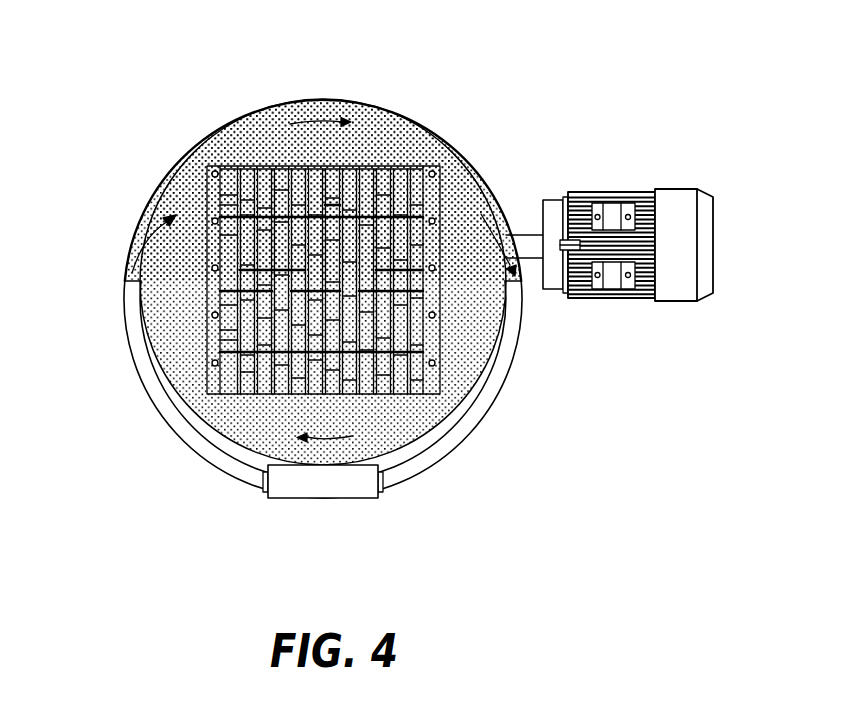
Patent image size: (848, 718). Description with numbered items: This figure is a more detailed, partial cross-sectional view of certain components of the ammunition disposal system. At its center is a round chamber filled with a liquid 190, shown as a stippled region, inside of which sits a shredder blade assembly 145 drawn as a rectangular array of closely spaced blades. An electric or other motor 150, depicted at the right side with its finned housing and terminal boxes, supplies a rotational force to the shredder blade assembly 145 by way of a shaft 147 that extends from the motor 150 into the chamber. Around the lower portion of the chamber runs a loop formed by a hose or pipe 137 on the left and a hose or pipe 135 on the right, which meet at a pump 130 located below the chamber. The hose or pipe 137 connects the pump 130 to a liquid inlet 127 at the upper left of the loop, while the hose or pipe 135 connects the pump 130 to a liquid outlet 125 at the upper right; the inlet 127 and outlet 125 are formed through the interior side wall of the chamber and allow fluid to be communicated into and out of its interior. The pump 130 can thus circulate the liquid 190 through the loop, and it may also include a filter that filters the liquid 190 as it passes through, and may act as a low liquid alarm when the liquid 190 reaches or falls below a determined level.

The liquid 190 is at (240, 142).
The shredder blade assembly 145 is at (350, 238).
The shaft 147 is at (527, 238).
The motor 150 is at (617, 208).
The liquid outlet 125 is at (522, 281).
The liquid inlet 127 is at (133, 252).
The hose or pipe 135 is at (475, 410).
The hose or pipe 137 is at (148, 365).
The pump 130 is at (308, 488).